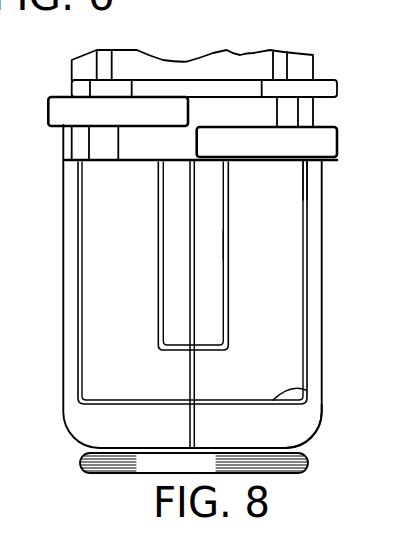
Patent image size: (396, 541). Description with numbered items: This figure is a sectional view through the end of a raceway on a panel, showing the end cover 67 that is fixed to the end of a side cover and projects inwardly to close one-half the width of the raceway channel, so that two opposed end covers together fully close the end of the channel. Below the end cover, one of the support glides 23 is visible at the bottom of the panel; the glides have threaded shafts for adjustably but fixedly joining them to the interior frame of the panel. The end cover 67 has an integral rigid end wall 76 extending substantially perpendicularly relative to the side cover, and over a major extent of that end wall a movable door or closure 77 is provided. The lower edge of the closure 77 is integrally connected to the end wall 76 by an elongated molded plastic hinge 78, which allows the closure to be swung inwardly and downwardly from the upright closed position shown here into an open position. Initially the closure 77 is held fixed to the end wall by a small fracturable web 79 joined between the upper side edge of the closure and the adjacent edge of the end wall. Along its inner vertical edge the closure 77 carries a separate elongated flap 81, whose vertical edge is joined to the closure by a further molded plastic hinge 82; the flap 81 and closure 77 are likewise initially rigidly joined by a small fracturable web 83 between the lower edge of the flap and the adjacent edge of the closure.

The glides 23 is at (130, 462).
The end cover 67 is at (63, 336).
The end wall 76 is at (297, 423).
The closure 77 is at (100, 278).
The molded plastic hinge 78 is at (306, 390).
The fracturable web 79 is at (303, 177).
The flap 81 is at (173, 238).
The molded plastic hinge 82 is at (223, 248).
The fracturable web 83 is at (203, 350).